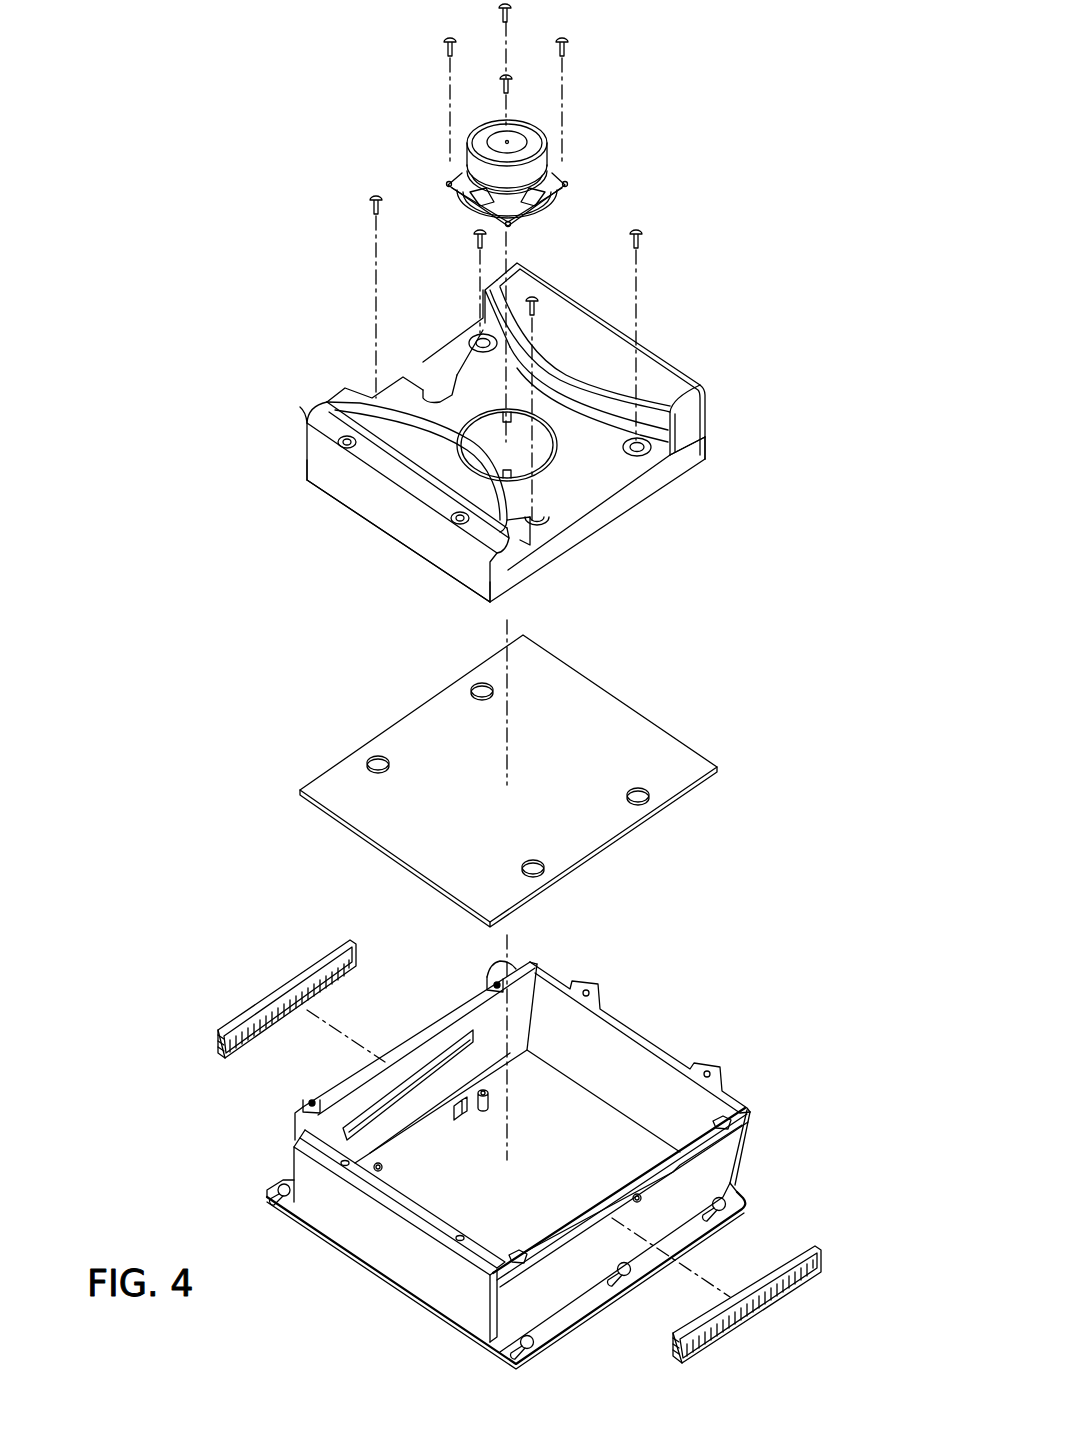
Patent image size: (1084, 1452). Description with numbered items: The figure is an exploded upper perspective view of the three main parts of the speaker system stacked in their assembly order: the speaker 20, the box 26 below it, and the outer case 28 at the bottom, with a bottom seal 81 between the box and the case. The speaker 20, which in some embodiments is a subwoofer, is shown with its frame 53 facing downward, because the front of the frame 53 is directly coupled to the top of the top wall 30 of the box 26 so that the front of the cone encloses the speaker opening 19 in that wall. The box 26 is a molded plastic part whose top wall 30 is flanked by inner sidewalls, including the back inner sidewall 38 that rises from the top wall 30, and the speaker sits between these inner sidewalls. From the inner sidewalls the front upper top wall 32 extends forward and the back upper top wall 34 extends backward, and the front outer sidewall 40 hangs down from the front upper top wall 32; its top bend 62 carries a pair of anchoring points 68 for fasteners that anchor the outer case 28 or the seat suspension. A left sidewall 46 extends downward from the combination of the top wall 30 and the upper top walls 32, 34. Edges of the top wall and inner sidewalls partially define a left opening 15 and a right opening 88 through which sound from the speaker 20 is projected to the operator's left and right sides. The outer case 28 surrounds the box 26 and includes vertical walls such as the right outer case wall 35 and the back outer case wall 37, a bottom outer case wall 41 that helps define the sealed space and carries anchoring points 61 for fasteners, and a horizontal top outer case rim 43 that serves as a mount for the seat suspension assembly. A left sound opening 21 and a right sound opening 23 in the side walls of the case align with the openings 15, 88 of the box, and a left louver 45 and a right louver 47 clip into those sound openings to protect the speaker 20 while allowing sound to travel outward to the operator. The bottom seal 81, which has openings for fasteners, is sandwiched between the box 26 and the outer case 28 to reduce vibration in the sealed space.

The left opening 15 is at (670, 499).
The speaker opening 19 is at (567, 447).
The speaker 20 is at (580, 147).
The left sound opening 21 is at (680, 1170).
The right sound opening 23 is at (367, 1093).
The box 26 is at (681, 324).
The outer case 28 is at (724, 1020).
The top wall 30 is at (575, 472).
The front upper top wall 32 is at (420, 460).
The back upper top wall 34 is at (571, 355).
The right outer case wall 35 is at (487, 1030).
The back outer case wall 37 is at (575, 1061).
The back inner sidewall 38 is at (583, 425).
The front outer sidewall 40 is at (390, 507).
The bottom outer case wall 41 is at (533, 1150).
The top outer case rim 43 is at (748, 1063).
The left louver 45 is at (807, 1240).
The left sidewall 46 is at (683, 442).
The right louver 47 is at (260, 1013).
The frame 53 is at (567, 190).
The anchoring points 61 is at (280, 1193).
The top bend 62 is at (300, 407).
The anchoring points 68 is at (343, 445).
The bottom seal 81 is at (663, 723).
The right opening 88 is at (433, 332).